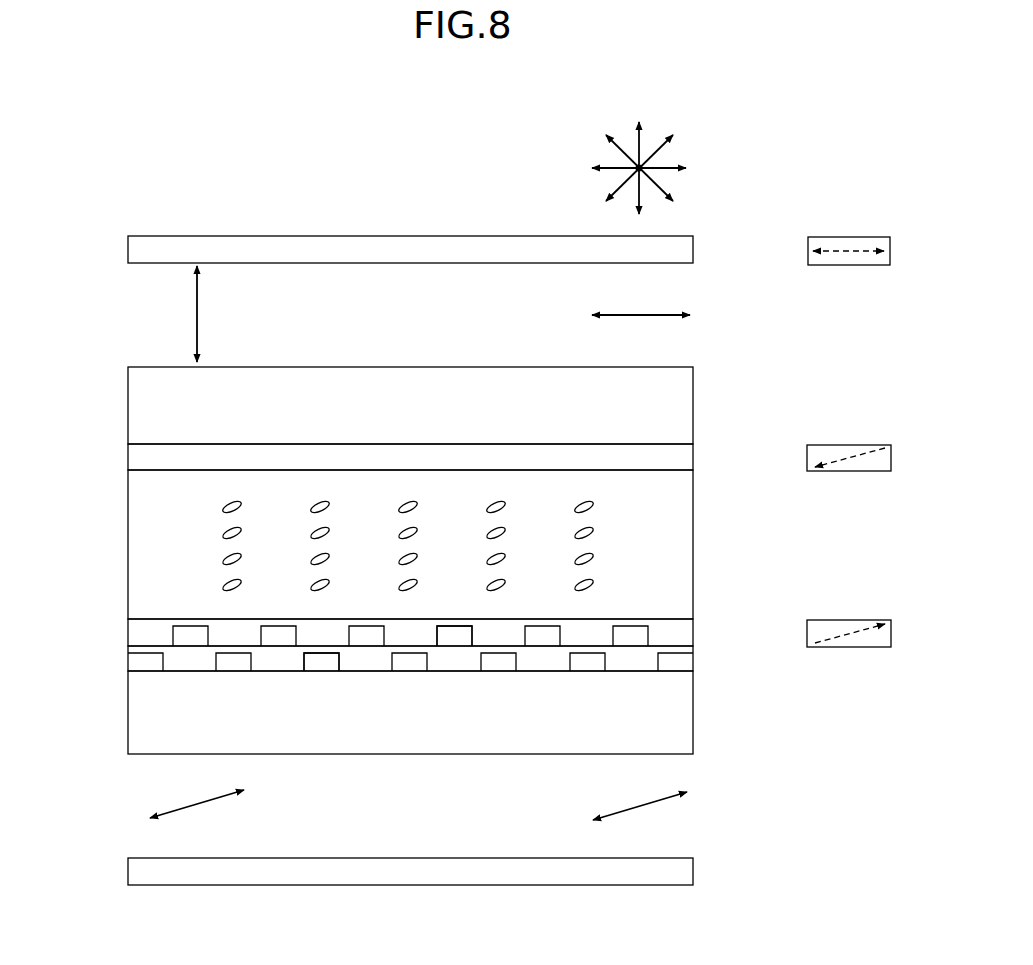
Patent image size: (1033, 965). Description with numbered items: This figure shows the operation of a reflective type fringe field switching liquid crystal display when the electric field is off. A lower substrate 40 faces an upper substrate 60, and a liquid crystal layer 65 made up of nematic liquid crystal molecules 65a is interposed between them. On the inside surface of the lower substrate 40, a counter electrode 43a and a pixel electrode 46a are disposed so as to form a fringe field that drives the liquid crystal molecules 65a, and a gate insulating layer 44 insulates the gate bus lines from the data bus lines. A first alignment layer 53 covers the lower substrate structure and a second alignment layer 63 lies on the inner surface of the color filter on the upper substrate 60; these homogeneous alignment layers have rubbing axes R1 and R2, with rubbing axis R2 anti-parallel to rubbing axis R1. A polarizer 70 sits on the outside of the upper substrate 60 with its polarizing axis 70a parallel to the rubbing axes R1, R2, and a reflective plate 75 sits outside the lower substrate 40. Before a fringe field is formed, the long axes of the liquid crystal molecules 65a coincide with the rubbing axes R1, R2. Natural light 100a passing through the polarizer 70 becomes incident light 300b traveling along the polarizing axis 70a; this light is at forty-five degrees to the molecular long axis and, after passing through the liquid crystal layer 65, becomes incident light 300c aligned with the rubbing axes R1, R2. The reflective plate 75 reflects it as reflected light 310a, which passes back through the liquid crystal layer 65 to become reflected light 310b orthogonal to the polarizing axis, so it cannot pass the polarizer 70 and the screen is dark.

The unpolarized incident light 100a is at (658, 162).
The polarizer 70 is at (693, 250).
The polarizing axis 70a is at (846, 250).
The reflected light 310b is at (196, 312).
The incident light 300b is at (640, 315).
The upper substrate 60 is at (690, 410).
The second alignment layer 63 is at (690, 462).
The liquid crystal layer 65 is at (690, 586).
The liquid crystal molecule 65a is at (592, 533).
The first alignment layer 53 is at (690, 628).
The gate insulating layer 44 is at (688, 648).
The lower substrate 40 is at (690, 707).
The counter electrode 43a is at (320, 660).
The pixel electrode 46a is at (458, 640).
The rubbing axis of the second alignment layer R2 is at (848, 457).
The rubbing axis of the first alignment layer R1 is at (848, 633).
The reflected light 310a is at (195, 806).
The incident light 300c is at (643, 805).
The reflective plate 75 is at (693, 872).